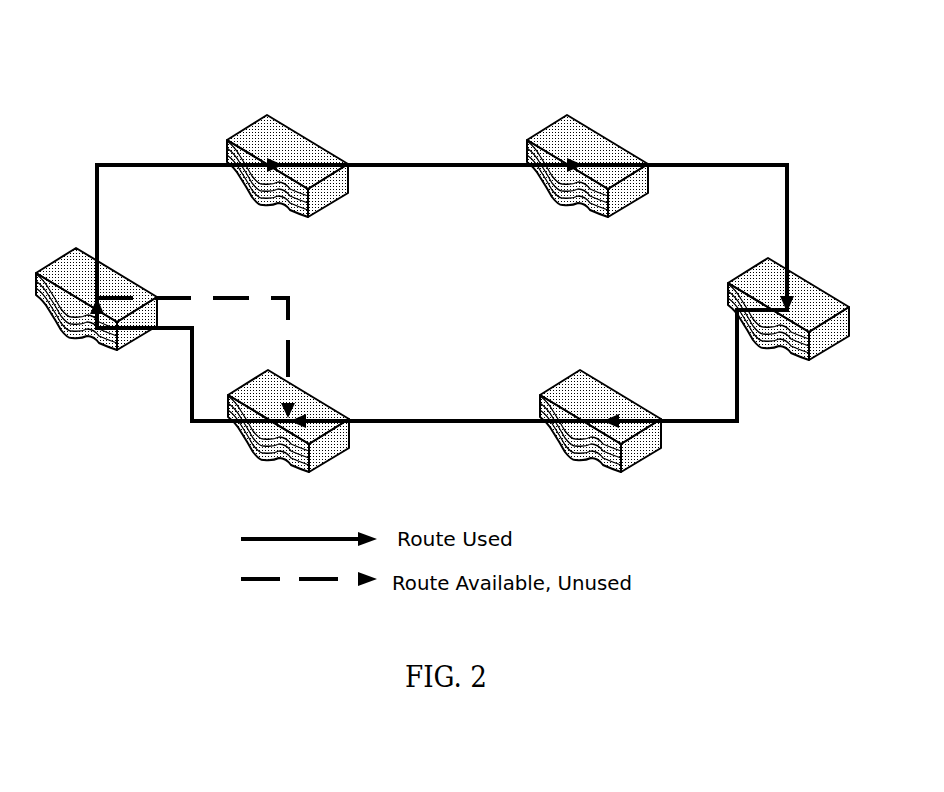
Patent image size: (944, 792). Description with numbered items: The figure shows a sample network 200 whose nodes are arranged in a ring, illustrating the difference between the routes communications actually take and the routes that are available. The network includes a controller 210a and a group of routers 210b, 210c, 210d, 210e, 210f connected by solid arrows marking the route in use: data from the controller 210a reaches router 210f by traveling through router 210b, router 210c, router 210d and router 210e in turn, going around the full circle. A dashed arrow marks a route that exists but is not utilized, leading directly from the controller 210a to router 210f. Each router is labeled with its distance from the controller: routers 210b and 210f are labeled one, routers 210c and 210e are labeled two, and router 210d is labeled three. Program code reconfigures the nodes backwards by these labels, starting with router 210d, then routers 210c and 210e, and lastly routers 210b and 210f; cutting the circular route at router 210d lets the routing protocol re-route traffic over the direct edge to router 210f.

The network 200 is at (657, 40).
The controller 210a is at (96, 313).
The router 210b is at (287, 174).
The router 210c is at (587, 174).
The router 210d is at (788, 314).
The router 210e is at (600, 436).
The router 210f is at (311, 436).